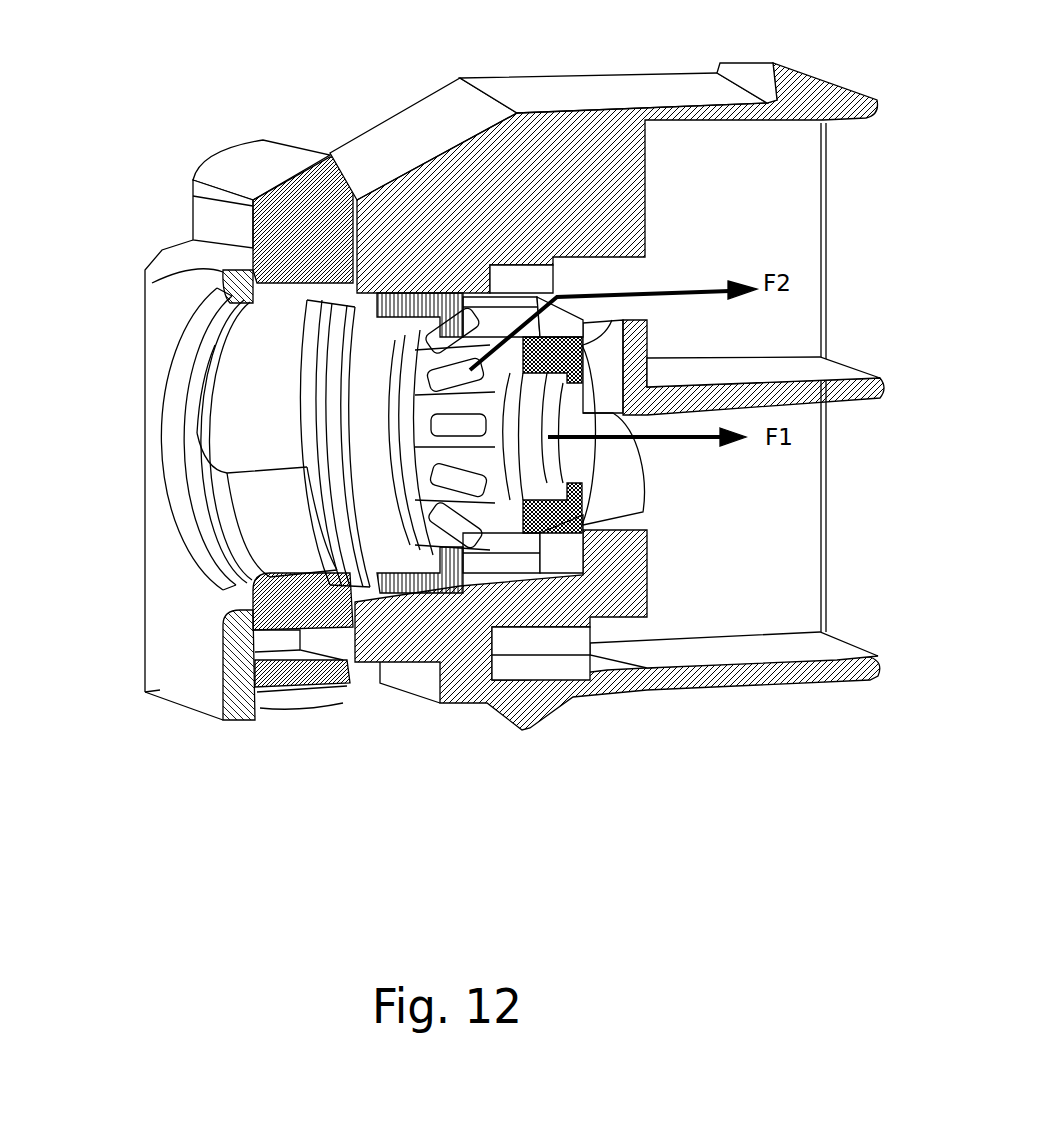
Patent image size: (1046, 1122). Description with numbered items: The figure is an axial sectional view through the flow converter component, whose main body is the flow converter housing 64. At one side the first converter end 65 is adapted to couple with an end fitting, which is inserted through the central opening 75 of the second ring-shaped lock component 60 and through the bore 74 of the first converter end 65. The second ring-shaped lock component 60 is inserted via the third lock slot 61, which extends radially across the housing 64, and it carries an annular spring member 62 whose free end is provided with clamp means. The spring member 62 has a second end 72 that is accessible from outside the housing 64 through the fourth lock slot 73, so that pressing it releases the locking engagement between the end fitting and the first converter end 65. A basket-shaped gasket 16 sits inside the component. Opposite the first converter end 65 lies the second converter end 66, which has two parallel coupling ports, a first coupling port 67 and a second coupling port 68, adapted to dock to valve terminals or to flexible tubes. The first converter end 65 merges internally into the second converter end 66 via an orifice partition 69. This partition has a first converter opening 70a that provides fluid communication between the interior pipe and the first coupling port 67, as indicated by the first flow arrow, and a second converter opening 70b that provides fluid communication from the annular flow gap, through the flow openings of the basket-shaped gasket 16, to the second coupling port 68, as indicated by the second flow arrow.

The basket-shaped gasket 16 is at (333, 330).
The second ring-shaped lock component 60 is at (268, 158).
The third lock slot 61 is at (360, 253).
The annular spring member 62 is at (297, 707).
The flow converter housing 64 is at (423, 147).
The first converter end 65 is at (213, 678).
The second converter end 66 is at (827, 680).
The first coupling port 67 is at (797, 528).
The second coupling port 68 is at (807, 333).
The orifice partition 69 is at (643, 343).
The first converter opening 70a is at (612, 483).
The second converter opening 70b is at (553, 290).
The second end 72 is at (347, 687).
The fourth lock slot 73 is at (273, 707).
The bore 74 is at (230, 535).
The central opening 75 is at (227, 392).